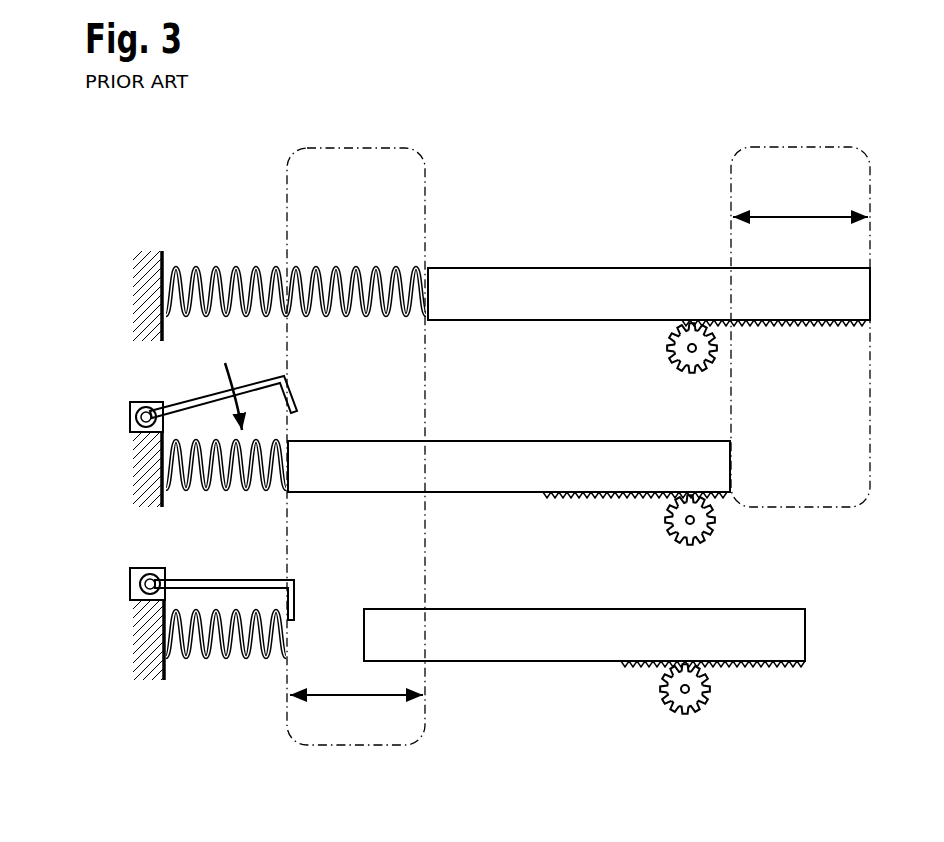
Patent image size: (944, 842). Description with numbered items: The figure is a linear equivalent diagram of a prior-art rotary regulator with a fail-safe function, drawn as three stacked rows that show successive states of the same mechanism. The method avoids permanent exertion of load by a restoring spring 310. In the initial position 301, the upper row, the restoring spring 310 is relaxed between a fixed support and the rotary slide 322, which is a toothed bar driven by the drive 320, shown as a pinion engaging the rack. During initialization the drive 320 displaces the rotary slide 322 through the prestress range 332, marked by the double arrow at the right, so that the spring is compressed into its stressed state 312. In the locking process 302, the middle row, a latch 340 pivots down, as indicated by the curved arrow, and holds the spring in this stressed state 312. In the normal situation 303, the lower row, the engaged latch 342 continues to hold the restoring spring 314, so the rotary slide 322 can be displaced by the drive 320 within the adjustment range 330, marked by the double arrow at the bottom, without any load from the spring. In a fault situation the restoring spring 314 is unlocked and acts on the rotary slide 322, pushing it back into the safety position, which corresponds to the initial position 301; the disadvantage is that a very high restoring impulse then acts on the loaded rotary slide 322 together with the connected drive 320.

The initial position 301 is at (132, 287).
The locking process 302 is at (132, 462).
The normal situation 303 is at (132, 630).
The restoring spring 310 is at (217, 258).
The stressed state 312 is at (208, 493).
The restoring spring 314 is at (208, 661).
The drive 320 is at (722, 341).
The rotary slide 322 is at (448, 640).
The adjustment range 330 is at (352, 707).
The prestress range 332 is at (794, 191).
The latch 340 is at (269, 372).
The engaged latch 342 is at (252, 577).